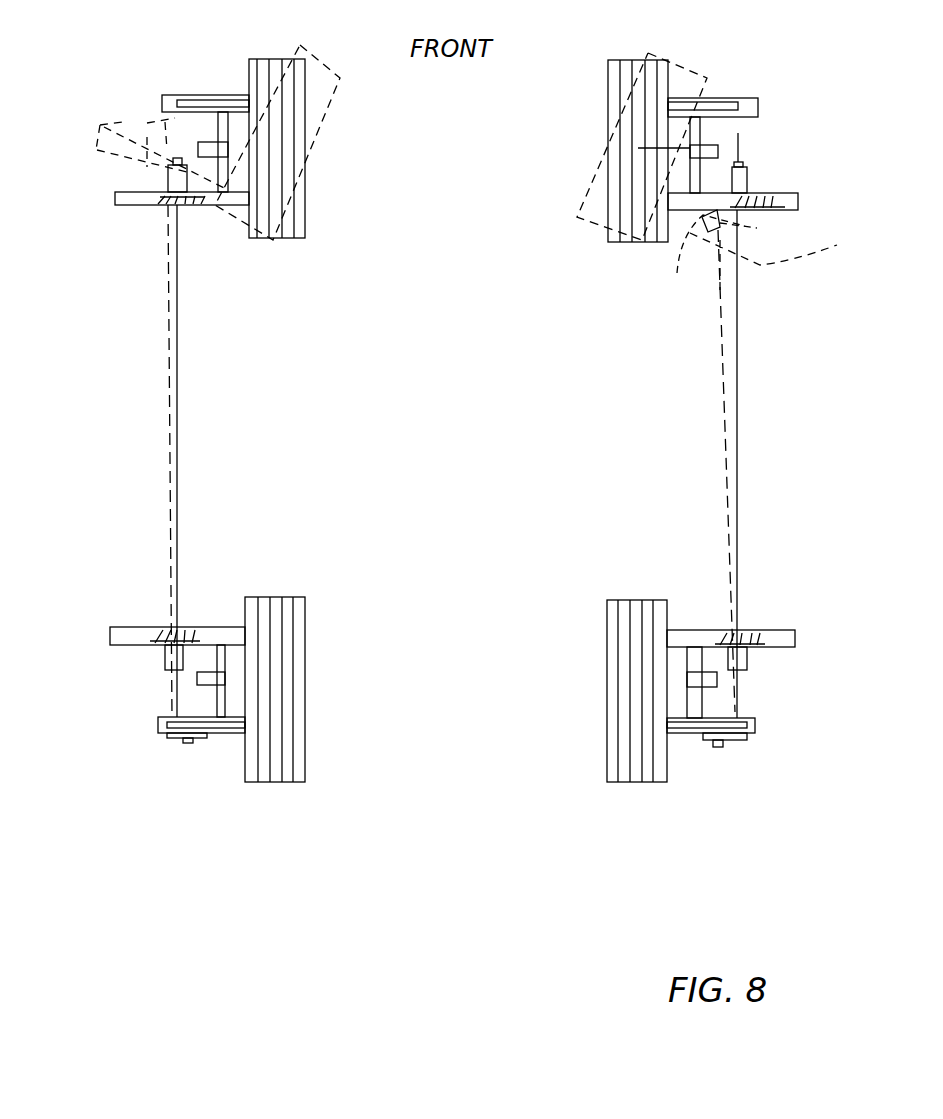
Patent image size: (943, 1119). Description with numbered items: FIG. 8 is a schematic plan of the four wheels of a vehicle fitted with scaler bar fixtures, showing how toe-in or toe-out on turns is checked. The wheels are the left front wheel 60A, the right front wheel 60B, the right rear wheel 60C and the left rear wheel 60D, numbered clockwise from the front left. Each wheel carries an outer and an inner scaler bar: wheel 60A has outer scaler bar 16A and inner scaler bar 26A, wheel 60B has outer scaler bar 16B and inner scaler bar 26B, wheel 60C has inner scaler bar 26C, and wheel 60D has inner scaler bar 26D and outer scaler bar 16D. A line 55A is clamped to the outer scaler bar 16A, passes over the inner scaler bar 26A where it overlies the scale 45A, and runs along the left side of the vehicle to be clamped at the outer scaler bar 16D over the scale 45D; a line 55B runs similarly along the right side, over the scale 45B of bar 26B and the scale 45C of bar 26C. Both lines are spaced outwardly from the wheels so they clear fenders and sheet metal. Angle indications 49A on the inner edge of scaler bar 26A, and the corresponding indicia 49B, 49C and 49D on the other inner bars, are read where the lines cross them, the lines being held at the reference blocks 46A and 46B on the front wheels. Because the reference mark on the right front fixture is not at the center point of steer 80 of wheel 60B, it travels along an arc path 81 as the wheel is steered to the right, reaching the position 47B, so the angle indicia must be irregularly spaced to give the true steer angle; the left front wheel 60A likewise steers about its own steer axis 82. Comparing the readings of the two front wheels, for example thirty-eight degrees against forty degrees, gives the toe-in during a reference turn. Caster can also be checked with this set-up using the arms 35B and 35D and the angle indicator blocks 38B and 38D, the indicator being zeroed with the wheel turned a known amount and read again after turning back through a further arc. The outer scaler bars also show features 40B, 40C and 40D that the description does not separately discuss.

The front left wheel 60A is at (255, 60).
The outer scaler bar 16A is at (162, 97).
The steer axis 82 is at (277, 148).
The scale 45A is at (238, 198).
The reference block 46A is at (168, 178).
The inner scaler bar 26A is at (115, 200).
The angle indications 49A is at (207, 205).
The line 55A is at (166, 342).
The left rear wheel 60D is at (285, 600).
The scale 45D is at (237, 630).
The inner scaler bar 26D is at (112, 628).
The pivot joint D 49D is at (240, 573).
The axle post D 35D is at (227, 677).
The axle block D 38D is at (200, 685).
The outer scaler bar 16D is at (158, 732).
The slot D 40D is at (233, 733).
The right front wheel 60B is at (633, 25).
The outer scaler bar 16B is at (760, 103).
The slot B 40B is at (713, 100).
The axle post B 35B is at (680, 147).
The center point of steer 80 is at (638, 148).
The axle block B 38B is at (743, 155).
The arc path 81 is at (738, 143).
The steered position of reference point 47B is at (747, 163).
The reference block 46B is at (747, 180).
The pivot plate B 45B is at (677, 193).
The pivot joint B 49B is at (767, 200).
The inner scaler bar 26B is at (767, 203).
The line 55B is at (723, 420).
The right rear wheel 60C is at (619, 600).
The pivot plate C 45C is at (685, 640).
The pivot joint C 49C is at (757, 640).
The inner scaler bar 26C is at (797, 628).
The slot C 40C is at (688, 727).